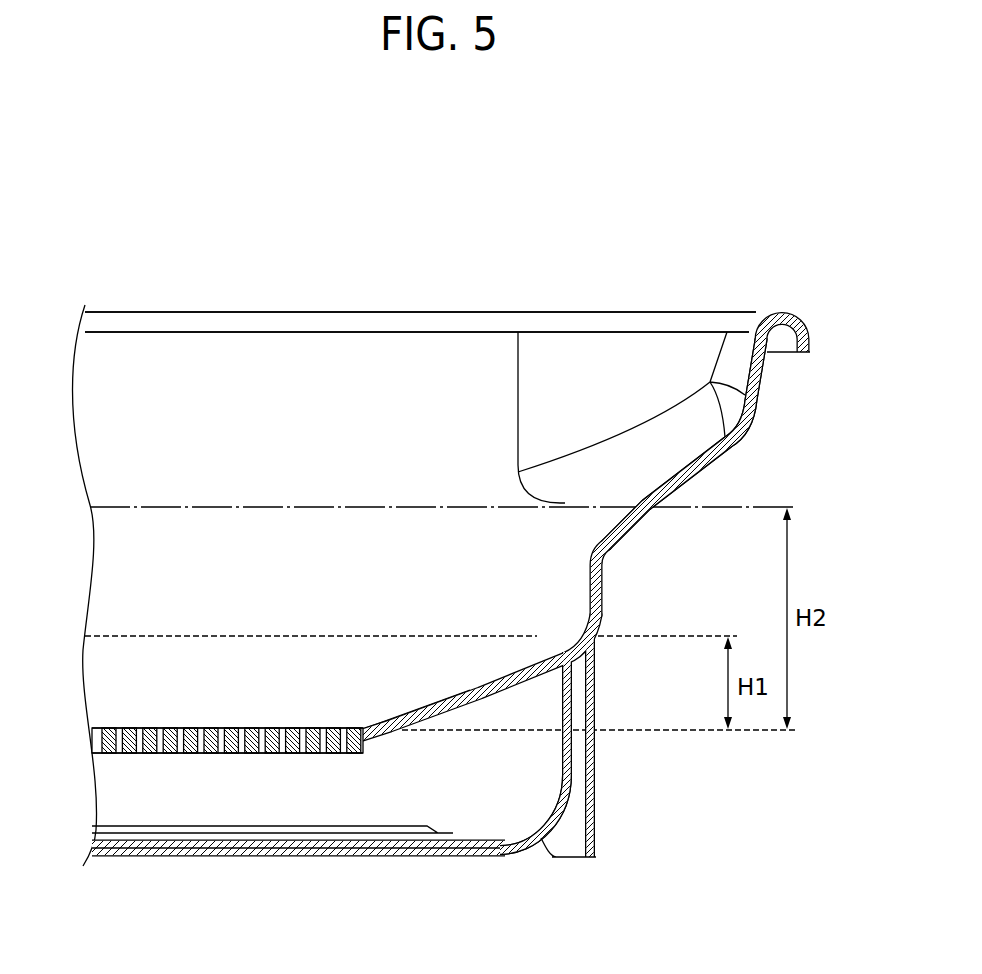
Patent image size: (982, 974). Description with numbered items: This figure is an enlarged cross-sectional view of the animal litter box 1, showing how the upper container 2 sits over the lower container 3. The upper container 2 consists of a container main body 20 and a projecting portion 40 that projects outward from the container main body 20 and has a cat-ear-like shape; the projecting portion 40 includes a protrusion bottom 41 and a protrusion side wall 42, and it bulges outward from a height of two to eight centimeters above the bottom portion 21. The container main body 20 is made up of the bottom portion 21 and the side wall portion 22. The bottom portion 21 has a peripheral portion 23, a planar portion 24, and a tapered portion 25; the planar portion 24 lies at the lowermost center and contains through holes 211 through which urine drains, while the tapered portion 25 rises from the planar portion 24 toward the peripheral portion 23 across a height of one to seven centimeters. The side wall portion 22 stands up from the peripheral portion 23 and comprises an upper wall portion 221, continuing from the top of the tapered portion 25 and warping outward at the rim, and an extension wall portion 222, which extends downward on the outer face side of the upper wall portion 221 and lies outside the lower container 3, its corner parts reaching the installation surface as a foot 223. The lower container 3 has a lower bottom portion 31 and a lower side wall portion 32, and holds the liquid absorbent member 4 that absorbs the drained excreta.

The animal litter box 1 is at (595, 169).
The upper container 2 is at (676, 240).
The container main body 20 is at (205, 290).
The bottom portion 21 is at (317, 728).
The through holes 211 is at (200, 753).
The side wall portion 22 is at (580, 543).
The upper wall portion 221 is at (600, 578).
The extension wall portion 222 is at (597, 695).
The foot 223 is at (597, 792).
The peripheral portion 23 is at (557, 653).
The planar portion 24 is at (188, 728).
The tapered portion 25 is at (465, 692).
The lower container 3 is at (527, 862).
The lower bottom portion 31 is at (463, 838).
The lower side wall portion 32 is at (575, 750).
The liquid absorbent member 4 is at (303, 835).
The projecting portion 40 is at (734, 290).
The protrusion bottom 41 is at (593, 485).
The protrusion side wall 42 is at (556, 362).